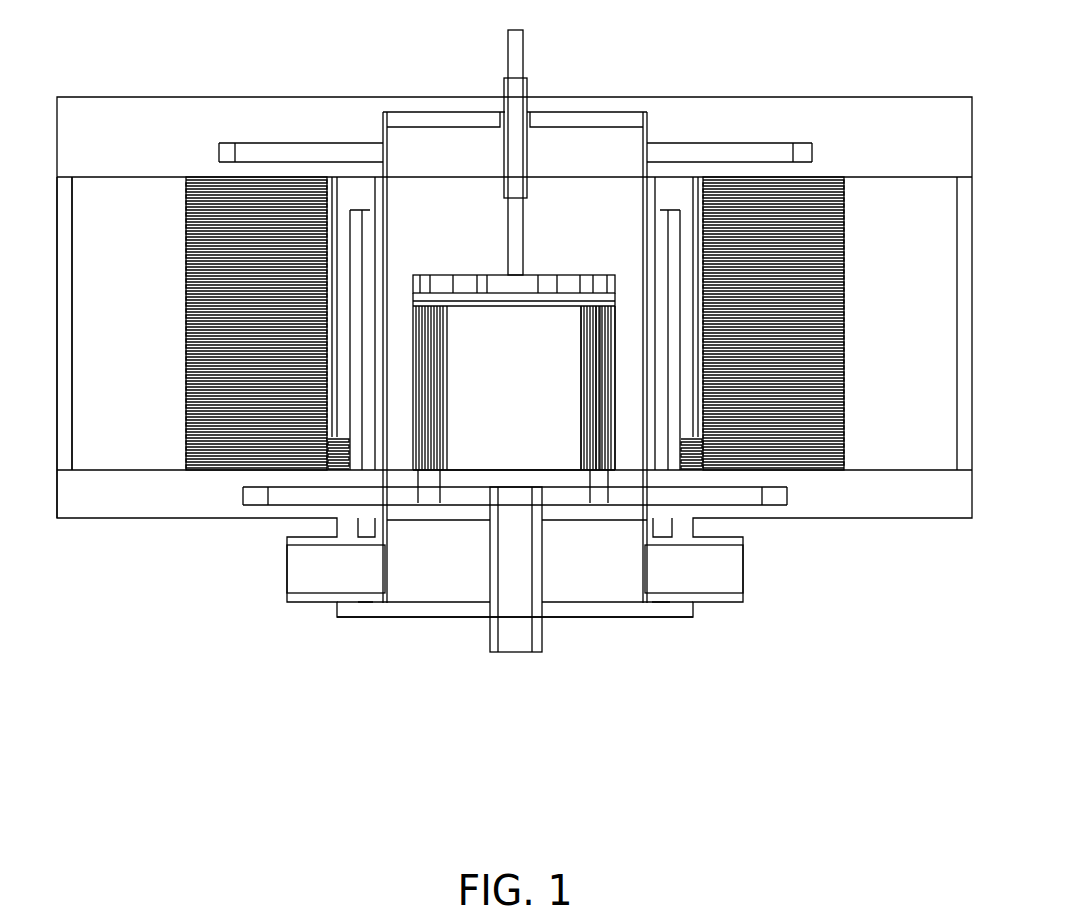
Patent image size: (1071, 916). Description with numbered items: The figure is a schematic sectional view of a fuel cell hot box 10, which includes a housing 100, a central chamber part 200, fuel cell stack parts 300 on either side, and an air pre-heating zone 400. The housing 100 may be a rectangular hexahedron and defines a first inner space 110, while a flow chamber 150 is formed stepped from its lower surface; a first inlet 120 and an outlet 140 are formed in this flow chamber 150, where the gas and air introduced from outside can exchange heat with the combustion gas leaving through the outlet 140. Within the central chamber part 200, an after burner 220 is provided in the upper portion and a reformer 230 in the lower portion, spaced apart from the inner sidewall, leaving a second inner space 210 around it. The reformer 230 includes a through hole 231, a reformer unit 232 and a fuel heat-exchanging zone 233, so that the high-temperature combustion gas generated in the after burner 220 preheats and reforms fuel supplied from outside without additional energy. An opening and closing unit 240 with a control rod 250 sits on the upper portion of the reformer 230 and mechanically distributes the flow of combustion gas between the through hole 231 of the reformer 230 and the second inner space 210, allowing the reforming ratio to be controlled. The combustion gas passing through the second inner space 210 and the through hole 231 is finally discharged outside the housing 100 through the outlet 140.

The fuel cell hot box 10 is at (378, 73).
The housing 100 is at (160, 138).
The first inner space 110 is at (148, 373).
The first inlet 120 is at (515, 636).
The outlet 140 is at (297, 572).
The flow chamber 150 is at (420, 608).
The central chamber part 200 is at (583, 242).
The second inner space 210 is at (402, 440).
The after burner 220 is at (402, 160).
The reformer 230 is at (475, 440).
The through hole 231 is at (508, 347).
The reformer unit 232 is at (597, 460).
The fuel heat-exchanging zone 233 is at (610, 432).
The opening and closing unit 240 is at (482, 284).
The control rod 250 is at (518, 70).
The fuel cell stack part 300 is at (803, 207).
The air pre-heating zone 400 is at (672, 210).